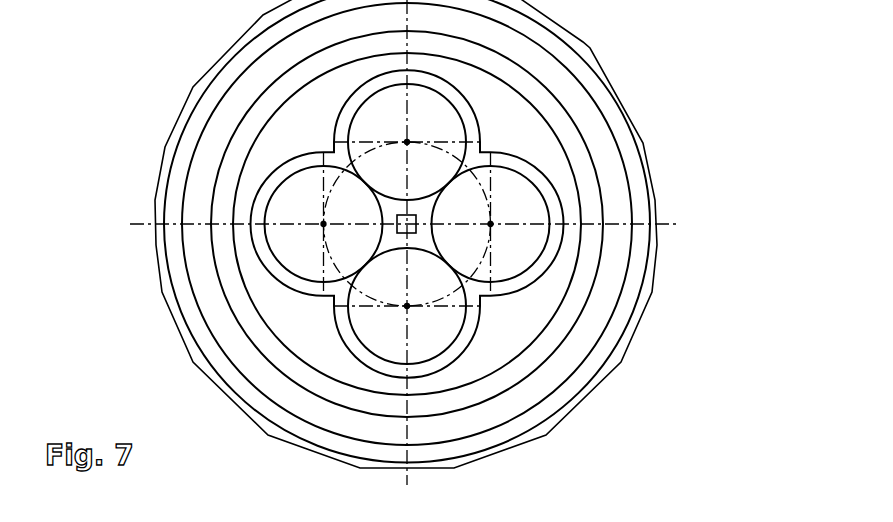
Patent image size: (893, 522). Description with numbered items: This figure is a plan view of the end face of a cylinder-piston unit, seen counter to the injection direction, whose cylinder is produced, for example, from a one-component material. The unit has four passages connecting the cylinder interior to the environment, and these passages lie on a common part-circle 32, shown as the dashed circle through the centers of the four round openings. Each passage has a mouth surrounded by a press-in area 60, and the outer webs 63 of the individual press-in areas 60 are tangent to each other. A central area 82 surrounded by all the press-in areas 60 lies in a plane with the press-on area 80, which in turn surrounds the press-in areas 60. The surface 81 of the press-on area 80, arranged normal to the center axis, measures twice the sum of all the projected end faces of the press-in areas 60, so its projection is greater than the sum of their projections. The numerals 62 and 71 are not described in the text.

The part-circle 32 is at (397, 219).
The press-in area 60 is at (347, 315).
The tube axis / center 62 is at (490, 224).
The outer web 63 is at (548, 215).
The channel 71 is at (526, 208).
The press-on area 80 is at (250, 282).
The surface of the press-on area 81 is at (508, 131).
The central area 82 is at (335, 182).